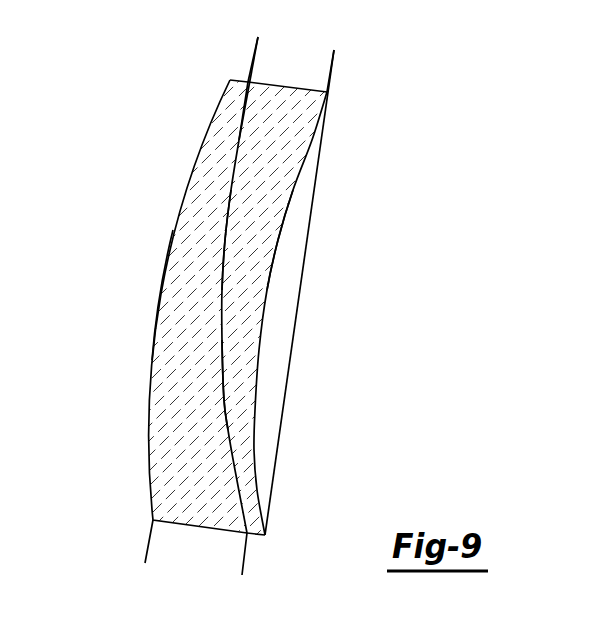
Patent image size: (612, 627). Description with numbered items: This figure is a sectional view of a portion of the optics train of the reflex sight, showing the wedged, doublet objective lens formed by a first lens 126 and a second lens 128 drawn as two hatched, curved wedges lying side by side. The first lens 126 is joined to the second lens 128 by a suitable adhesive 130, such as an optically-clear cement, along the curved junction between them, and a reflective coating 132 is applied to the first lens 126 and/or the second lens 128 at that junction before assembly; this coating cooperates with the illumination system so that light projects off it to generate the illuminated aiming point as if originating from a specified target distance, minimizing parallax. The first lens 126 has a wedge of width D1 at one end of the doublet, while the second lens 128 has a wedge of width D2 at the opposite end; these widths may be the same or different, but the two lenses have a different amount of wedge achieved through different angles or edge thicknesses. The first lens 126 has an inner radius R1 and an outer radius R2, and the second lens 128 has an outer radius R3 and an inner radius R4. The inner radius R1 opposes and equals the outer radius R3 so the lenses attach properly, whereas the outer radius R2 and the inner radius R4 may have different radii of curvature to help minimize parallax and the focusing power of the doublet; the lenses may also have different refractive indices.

The first lens 126 is at (160, 487).
The second lens 128 is at (393, 118).
The adhesive 130 is at (312, 342).
The reflective coating 132 is at (223, 380).
The inner radius R1 is at (223, 238).
The outer radius R2 is at (156, 289).
The outer radius R3 is at (236, 138).
The inner radius R4 is at (355, 231).
The width D1 is at (196, 547).
The width D2 is at (291, 64).